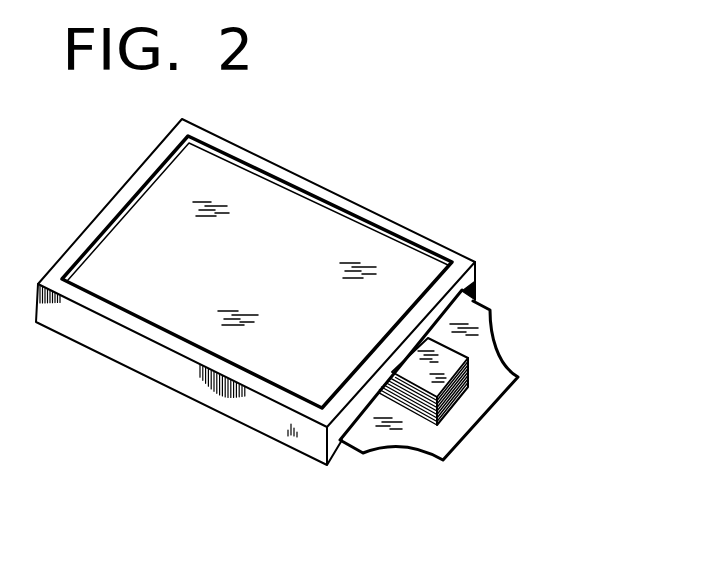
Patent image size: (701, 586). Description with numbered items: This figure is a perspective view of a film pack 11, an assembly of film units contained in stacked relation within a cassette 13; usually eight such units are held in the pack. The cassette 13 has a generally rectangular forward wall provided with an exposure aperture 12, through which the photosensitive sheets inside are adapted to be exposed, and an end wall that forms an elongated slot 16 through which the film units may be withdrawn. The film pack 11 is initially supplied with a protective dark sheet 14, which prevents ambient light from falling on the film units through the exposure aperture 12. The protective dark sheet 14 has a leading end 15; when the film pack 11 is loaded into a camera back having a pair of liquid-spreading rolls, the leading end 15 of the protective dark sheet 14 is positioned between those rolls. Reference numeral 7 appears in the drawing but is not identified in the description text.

The stack of cards 7 is at (447, 363).
The film pack 11 is at (190, 430).
The exposure aperture 12 is at (289, 198).
The cassette 13 is at (78, 322).
The protective dark sheet 14 is at (258, 288).
The leading end 15 is at (437, 449).
The elongated slot 16 is at (465, 292).